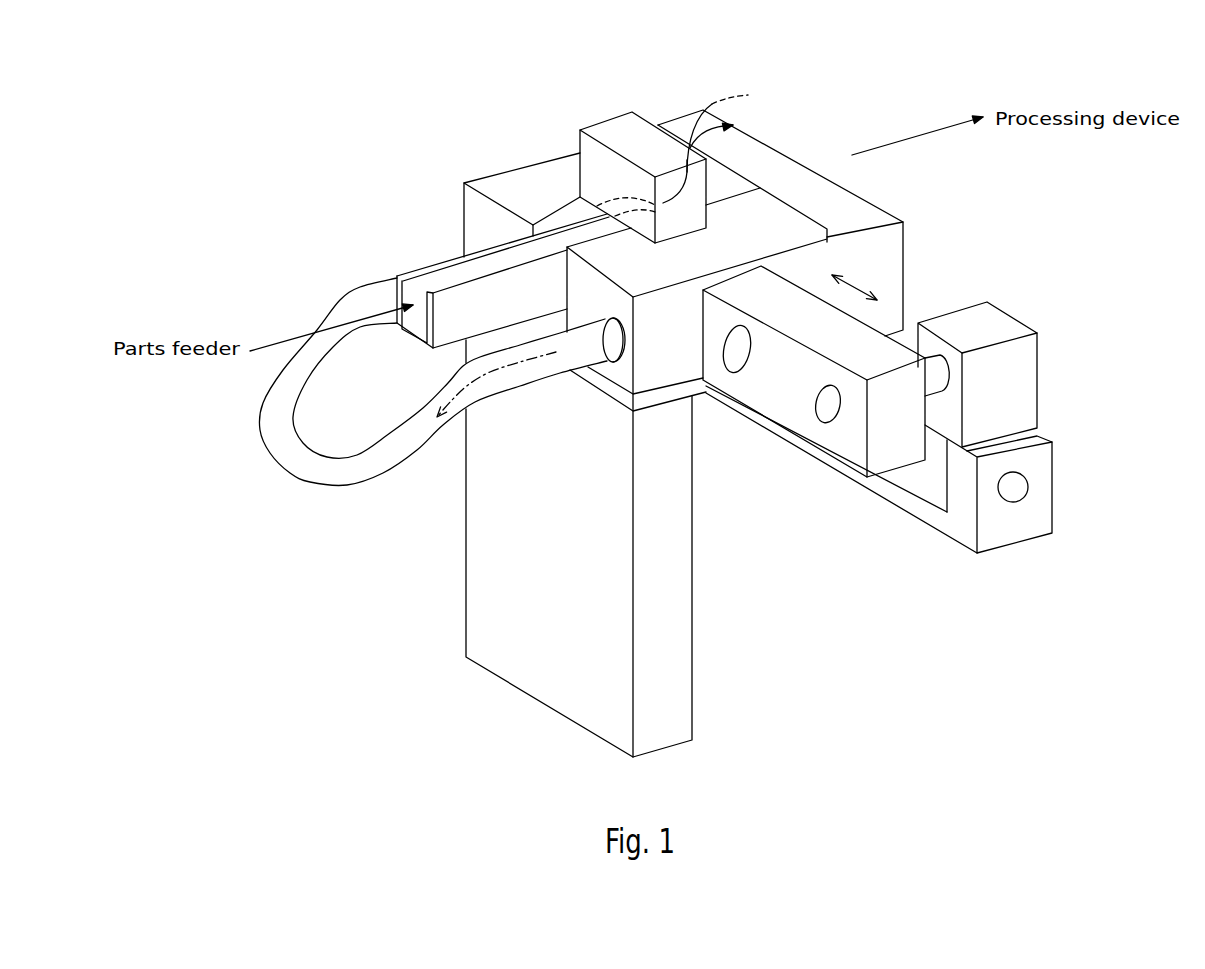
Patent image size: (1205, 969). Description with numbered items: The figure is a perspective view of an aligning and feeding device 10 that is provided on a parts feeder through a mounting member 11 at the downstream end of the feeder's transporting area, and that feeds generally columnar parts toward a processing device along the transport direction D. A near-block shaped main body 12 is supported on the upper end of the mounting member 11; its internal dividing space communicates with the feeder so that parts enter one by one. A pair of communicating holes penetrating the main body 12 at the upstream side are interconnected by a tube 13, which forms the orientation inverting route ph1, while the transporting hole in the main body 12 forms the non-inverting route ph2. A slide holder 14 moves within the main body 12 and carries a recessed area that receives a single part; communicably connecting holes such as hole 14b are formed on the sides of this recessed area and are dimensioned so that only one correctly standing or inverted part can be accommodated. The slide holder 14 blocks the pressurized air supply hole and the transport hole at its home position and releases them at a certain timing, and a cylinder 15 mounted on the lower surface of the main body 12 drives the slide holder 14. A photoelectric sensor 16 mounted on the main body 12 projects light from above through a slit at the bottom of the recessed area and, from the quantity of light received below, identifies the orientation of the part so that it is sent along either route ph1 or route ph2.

The aligning and feeding device 10 is at (358, 243).
The mounting member 11 is at (687, 685).
The main body 12 is at (667, 378).
The tube 13 is at (307, 474).
The slide holder 14 is at (814, 426).
The communicably connecting hole 14b is at (737, 375).
The cylinder 15 is at (932, 493).
The photoelectric sensor 16 is at (620, 130).
The orientation inverting route ph1 is at (527, 368).
The non-inverting route ph2 is at (748, 95).
The transport direction D is at (255, 664).